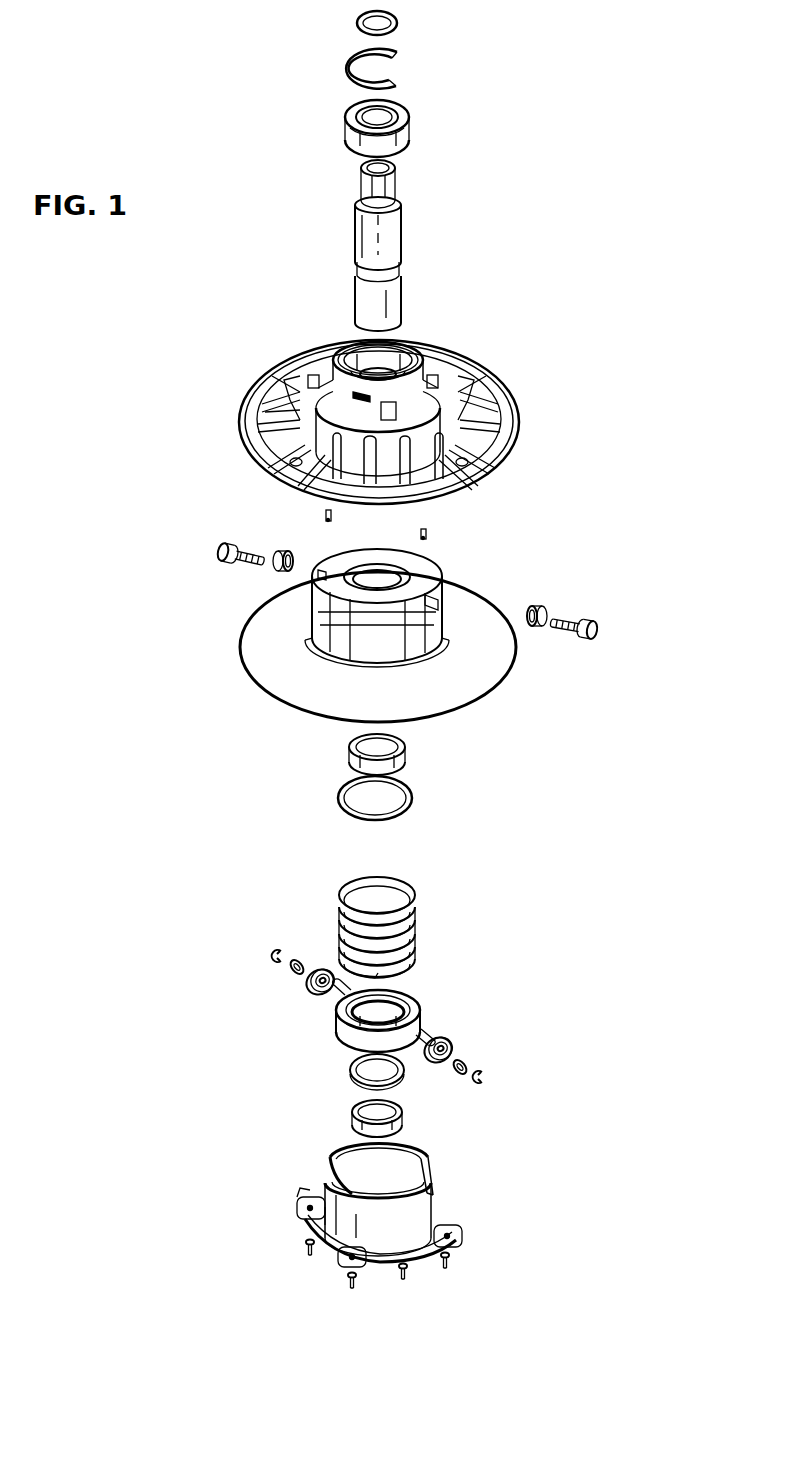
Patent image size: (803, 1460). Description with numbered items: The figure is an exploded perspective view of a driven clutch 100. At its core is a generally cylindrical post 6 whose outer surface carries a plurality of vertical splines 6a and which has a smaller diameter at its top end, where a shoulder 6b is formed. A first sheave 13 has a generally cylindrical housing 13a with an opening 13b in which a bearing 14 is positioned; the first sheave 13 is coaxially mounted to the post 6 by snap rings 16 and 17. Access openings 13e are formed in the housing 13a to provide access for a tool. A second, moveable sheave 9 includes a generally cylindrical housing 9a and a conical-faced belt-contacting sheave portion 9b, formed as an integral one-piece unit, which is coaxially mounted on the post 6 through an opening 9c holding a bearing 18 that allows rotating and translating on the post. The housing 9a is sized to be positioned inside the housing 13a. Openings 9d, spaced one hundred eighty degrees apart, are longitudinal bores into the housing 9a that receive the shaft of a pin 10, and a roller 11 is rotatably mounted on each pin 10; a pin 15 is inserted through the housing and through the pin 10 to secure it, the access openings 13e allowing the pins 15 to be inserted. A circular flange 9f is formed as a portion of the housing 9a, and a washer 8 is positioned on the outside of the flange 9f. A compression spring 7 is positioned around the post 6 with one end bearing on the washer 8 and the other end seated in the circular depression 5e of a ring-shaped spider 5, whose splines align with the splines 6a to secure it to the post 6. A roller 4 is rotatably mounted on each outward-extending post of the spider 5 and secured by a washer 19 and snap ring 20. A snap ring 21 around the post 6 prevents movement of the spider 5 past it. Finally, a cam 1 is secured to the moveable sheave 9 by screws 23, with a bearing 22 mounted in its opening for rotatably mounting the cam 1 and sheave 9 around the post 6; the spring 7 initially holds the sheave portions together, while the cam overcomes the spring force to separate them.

The driven clutch 100 is at (643, 197).
The cam 1 is at (415, 1149).
The roller 4 is at (312, 992).
The spider 5 is at (393, 1006).
The circular depression 5e is at (410, 997).
The post 6 is at (399, 245).
The vertical splines 6a is at (401, 266).
The shoulder 6b is at (400, 193).
The compression spring 7 is at (413, 903).
The washer 8 is at (413, 798).
The second sheave 9 is at (378, 628).
The housing 9a is at (323, 640).
The sheave portion 9b is at (307, 692).
The opening 9c is at (402, 578).
The openings 9d is at (436, 600).
The circular flange 9f is at (377, 566).
The pin 10 is at (238, 556).
The roller 11 is at (289, 551).
The first sheave 13 is at (366, 407).
The housing 13a is at (265, 412).
The opening 13b is at (395, 352).
The access openings 13e is at (313, 373).
The bearing 14 is at (410, 129).
The pin 15 is at (326, 517).
The snap ring 16 is at (345, 70).
The snap ring 17 is at (357, 21).
The bearing 18 is at (405, 748).
The washer 19 is at (292, 973).
The snap ring 20 is at (279, 948).
The snap ring 21 is at (350, 1071).
The bearing 22 is at (352, 1113).
The screws 23 is at (305, 1252).